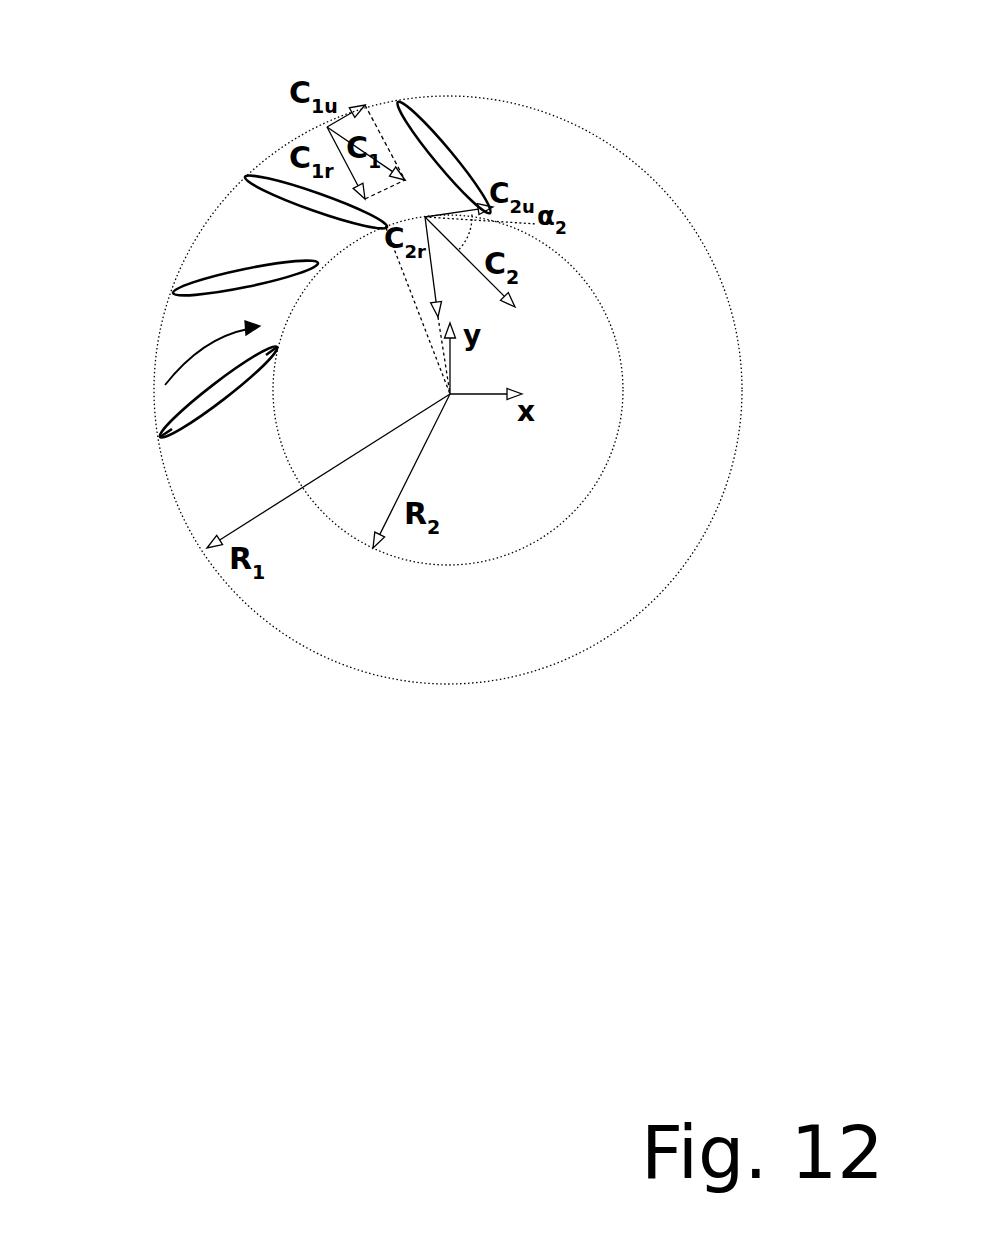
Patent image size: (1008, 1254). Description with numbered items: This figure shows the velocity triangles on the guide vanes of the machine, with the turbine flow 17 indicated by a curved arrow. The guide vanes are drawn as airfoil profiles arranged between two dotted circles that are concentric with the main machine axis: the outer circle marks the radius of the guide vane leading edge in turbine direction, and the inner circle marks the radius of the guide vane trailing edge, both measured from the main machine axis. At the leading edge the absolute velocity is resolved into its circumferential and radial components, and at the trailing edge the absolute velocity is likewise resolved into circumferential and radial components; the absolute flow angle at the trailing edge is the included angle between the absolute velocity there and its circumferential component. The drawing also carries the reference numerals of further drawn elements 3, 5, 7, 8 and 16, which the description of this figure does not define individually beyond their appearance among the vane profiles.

The guide vane 3 is at (273, 187).
The blade 5 is at (192, 425).
The leading edge 7 is at (158, 437).
The trailing edge 8 is at (276, 347).
The rotor blade 16 is at (461, 109).
The turbine flow 17 is at (203, 345).